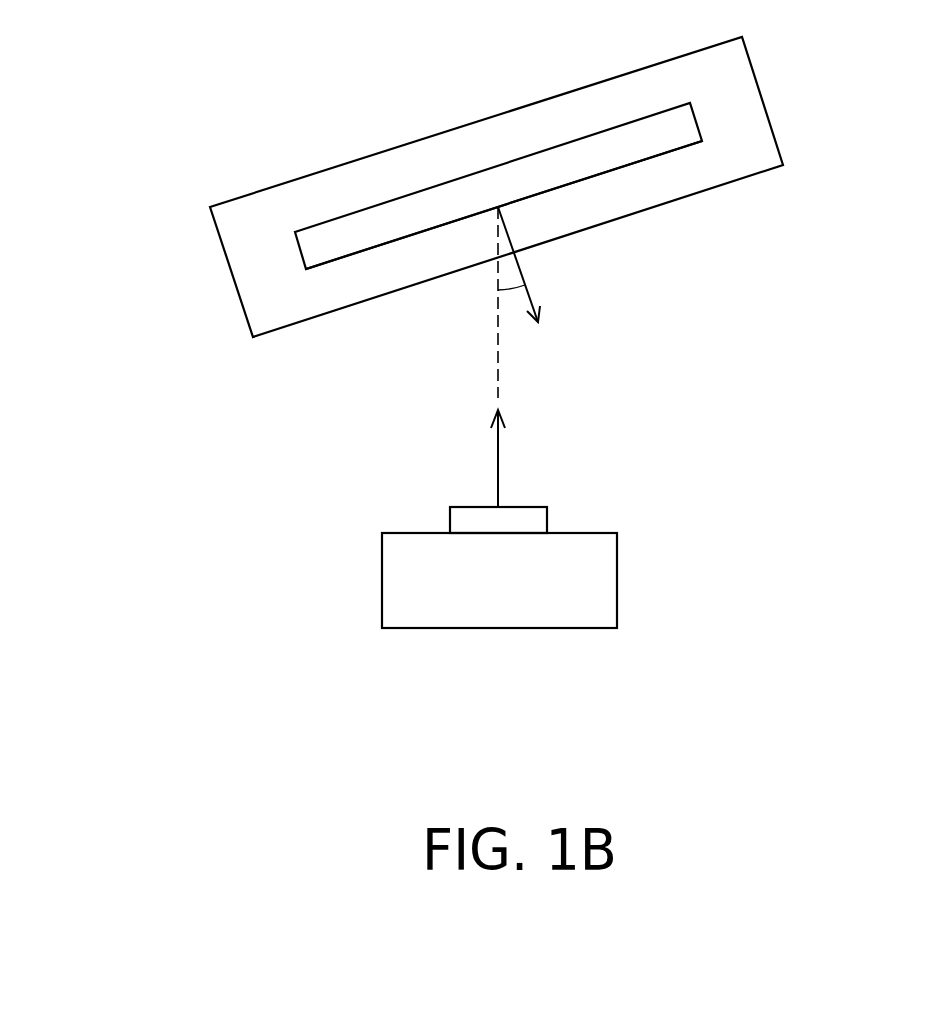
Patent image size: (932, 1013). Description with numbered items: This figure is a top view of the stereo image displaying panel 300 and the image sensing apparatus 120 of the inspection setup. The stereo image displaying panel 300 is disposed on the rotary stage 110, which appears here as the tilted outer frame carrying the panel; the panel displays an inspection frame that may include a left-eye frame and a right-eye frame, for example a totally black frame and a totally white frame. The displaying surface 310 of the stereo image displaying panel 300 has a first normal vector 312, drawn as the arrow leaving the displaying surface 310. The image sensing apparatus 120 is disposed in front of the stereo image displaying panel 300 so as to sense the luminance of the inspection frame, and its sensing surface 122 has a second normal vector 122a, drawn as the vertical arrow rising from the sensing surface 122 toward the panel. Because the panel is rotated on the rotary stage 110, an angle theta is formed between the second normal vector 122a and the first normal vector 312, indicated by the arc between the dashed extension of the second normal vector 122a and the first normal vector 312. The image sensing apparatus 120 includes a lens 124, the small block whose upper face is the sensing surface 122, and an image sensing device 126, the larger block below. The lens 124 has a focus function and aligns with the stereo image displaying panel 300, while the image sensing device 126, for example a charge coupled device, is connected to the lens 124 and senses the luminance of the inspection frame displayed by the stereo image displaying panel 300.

The rotary stage 110 is at (767, 112).
The stereo image displaying panel 300 is at (682, 123).
The displaying surface 310 is at (647, 158).
The first normal vector 312 is at (525, 273).
The image sensing apparatus 120 is at (258, 493).
The sensing surface 122 is at (523, 505).
The second normal vector 122a is at (499, 458).
The lens 124 is at (450, 521).
The image sensing device 126 is at (390, 598).